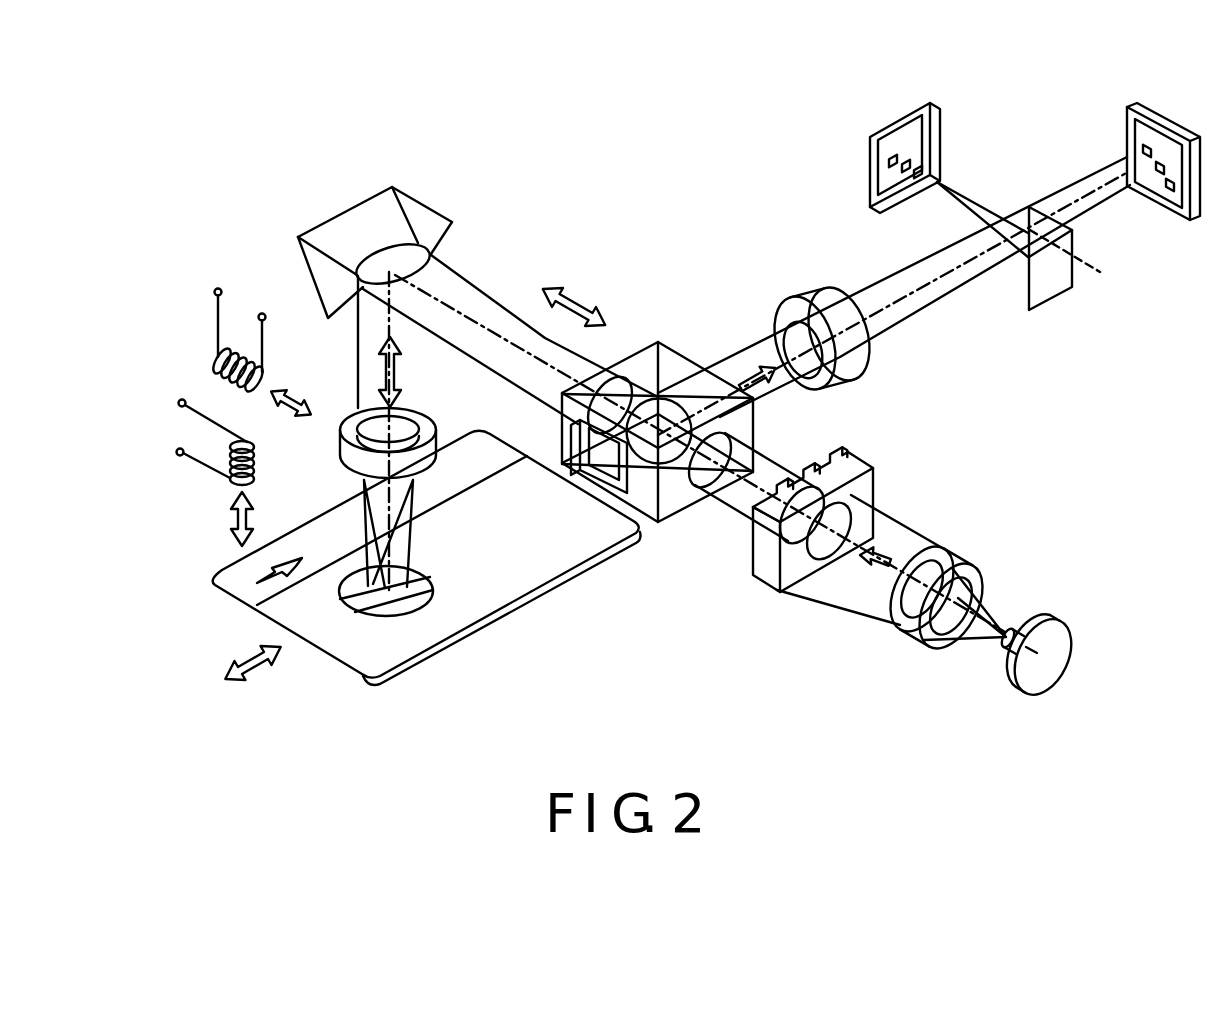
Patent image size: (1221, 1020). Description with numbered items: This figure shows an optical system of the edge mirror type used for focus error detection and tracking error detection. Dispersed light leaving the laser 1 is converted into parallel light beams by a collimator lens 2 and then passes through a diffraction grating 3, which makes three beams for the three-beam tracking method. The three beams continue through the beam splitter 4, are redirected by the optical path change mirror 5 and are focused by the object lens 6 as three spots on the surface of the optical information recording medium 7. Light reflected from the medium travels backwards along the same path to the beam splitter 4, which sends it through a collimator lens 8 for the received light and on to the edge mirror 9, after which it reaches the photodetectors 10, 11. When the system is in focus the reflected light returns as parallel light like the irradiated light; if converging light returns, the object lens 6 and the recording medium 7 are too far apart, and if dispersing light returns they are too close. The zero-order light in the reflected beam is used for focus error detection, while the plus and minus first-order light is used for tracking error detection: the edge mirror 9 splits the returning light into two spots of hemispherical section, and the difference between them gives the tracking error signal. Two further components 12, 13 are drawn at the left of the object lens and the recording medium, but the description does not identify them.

The semiconductor laser 1 is at (1053, 670).
The collimator lens 2 is at (970, 569).
The diffraction grating 3 is at (877, 502).
The beam splitter 4 is at (661, 342).
The optical path change mirror 5 is at (373, 208).
The object lens 6 is at (342, 460).
The optical information recording medium 7 is at (433, 650).
The collimator lens 8 is at (815, 292).
The edge mirror 9 is at (1053, 293).
The photodetector 10 is at (1175, 218).
The photodetector 11 is at (892, 122).
The tracking coil 12 is at (218, 345).
The focusing coil 13 is at (228, 460).